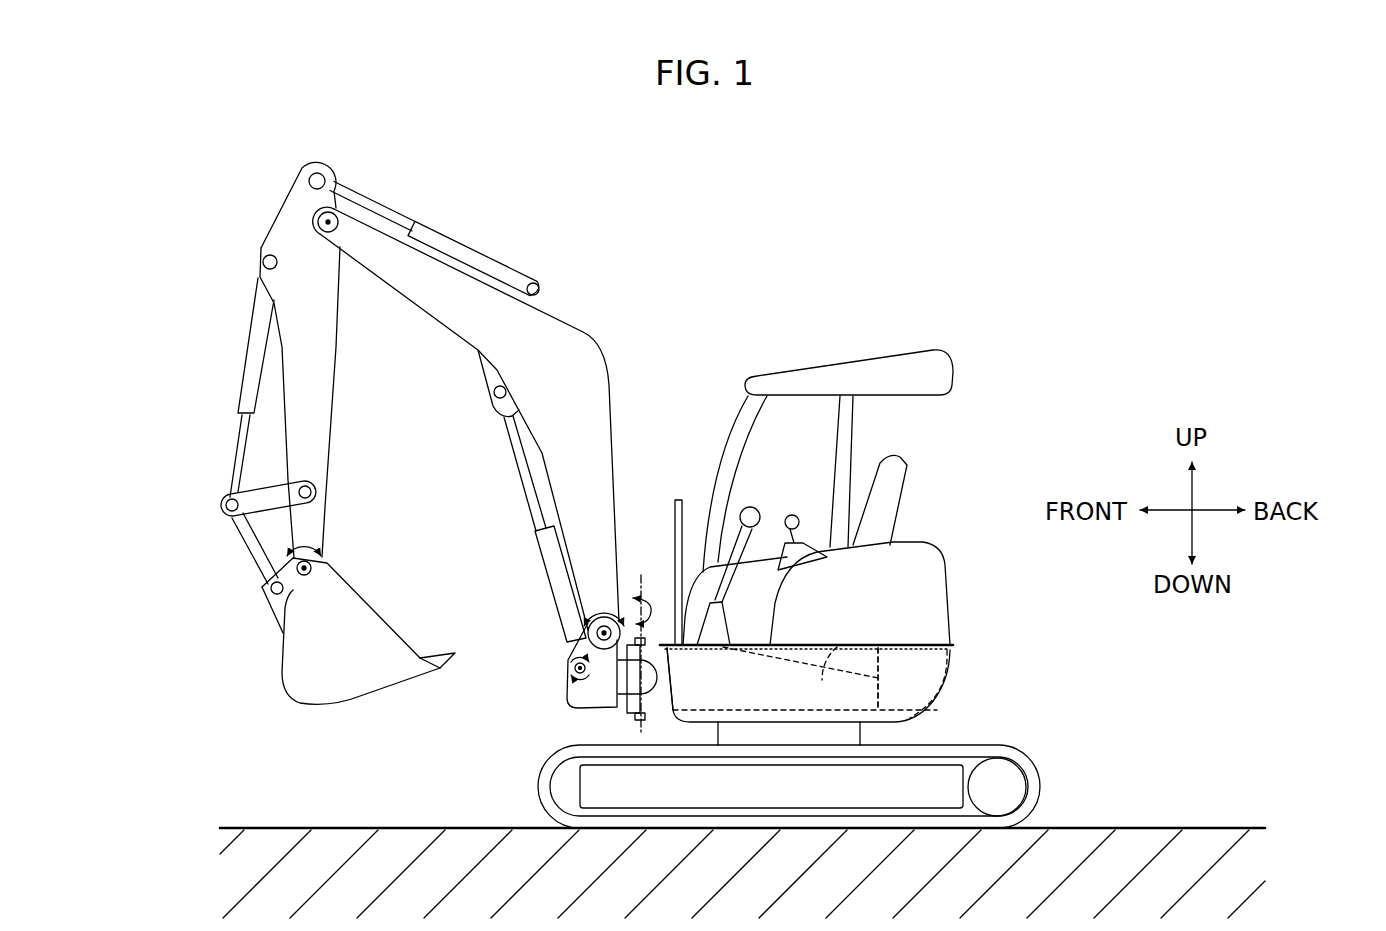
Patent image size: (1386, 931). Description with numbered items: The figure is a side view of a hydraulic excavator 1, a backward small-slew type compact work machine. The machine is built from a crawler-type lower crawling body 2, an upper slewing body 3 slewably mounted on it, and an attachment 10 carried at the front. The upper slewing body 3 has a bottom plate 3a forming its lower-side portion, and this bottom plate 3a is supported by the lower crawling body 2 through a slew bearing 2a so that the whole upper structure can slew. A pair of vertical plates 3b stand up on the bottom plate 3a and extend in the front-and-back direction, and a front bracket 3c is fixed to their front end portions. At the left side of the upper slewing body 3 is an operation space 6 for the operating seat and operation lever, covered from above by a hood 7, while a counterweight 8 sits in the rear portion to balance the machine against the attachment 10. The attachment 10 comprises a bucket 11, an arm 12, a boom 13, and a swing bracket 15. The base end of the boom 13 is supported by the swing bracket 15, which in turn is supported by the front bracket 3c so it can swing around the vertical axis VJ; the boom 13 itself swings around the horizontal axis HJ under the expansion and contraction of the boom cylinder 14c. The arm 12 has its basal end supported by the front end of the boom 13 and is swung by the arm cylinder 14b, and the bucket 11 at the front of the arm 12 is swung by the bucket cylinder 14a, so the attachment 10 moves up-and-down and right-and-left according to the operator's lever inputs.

The hydraulic excavator 1 is at (957, 268).
The lower crawling body 2 is at (806, 775).
The slew bearing 2a is at (822, 733).
The upper slewing body 3 is at (824, 631).
The bottom plate 3a is at (898, 715).
The vertical plates 3b is at (845, 641).
The front bracket 3c is at (660, 703).
The operation space 6 is at (844, 461).
The hood 7 is at (943, 373).
The counterweight 8 is at (915, 677).
The attachment 10 is at (562, 239).
The bucket 11 is at (355, 673).
The arm 12 is at (327, 349).
The boom 13 is at (590, 363).
The bucket cylinder 14a is at (257, 350).
The arm cylinder 14b is at (477, 262).
The boom cylinder 14c is at (535, 545).
The swing bracket 15 is at (569, 629).
The horizontal axis HJ is at (578, 611).
The vertical axis VJ is at (653, 593).